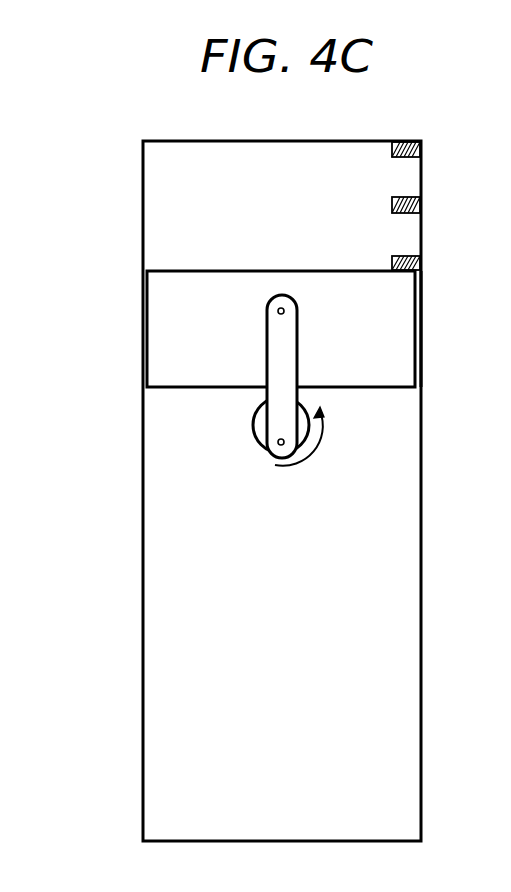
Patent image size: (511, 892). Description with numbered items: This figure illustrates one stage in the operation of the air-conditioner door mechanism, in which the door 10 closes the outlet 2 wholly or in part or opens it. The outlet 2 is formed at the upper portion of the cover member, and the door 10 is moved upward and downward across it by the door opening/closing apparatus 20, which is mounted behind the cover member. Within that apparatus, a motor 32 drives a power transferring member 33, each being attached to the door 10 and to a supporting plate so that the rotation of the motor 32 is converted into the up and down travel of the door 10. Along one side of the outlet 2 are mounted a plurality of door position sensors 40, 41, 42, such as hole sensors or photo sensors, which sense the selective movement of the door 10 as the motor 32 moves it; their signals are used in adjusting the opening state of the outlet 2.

The outlet 2 is at (363, 152).
The door 10 is at (165, 298).
The door opening/closing apparatus 20 is at (423, 372).
The motor 32 is at (262, 420).
The power transferring member 33 is at (258, 353).
The door position sensor 40 is at (422, 143).
The door position sensor 41 is at (422, 203).
The door position sensor 42 is at (422, 265).